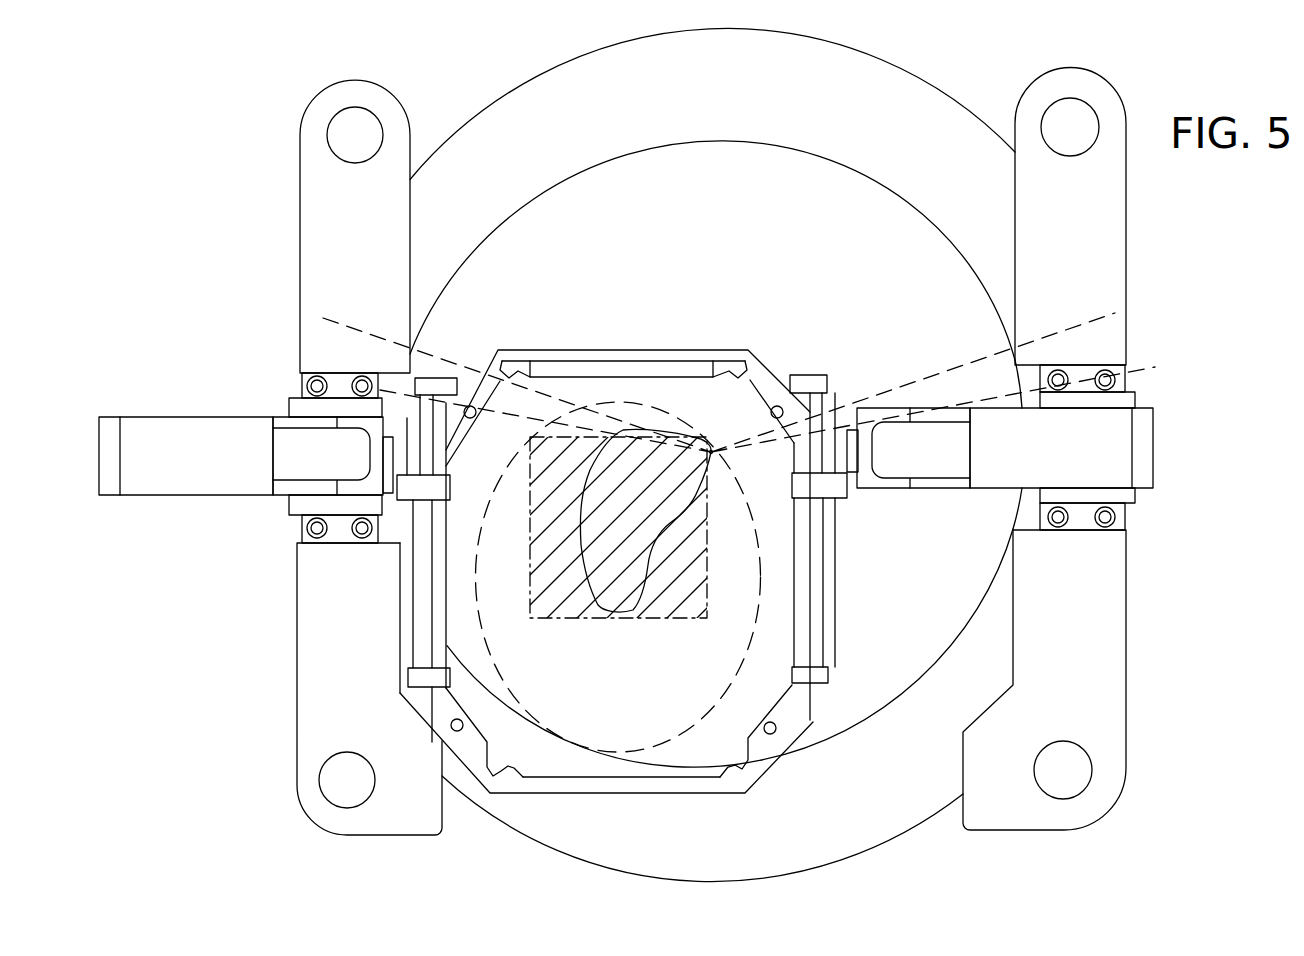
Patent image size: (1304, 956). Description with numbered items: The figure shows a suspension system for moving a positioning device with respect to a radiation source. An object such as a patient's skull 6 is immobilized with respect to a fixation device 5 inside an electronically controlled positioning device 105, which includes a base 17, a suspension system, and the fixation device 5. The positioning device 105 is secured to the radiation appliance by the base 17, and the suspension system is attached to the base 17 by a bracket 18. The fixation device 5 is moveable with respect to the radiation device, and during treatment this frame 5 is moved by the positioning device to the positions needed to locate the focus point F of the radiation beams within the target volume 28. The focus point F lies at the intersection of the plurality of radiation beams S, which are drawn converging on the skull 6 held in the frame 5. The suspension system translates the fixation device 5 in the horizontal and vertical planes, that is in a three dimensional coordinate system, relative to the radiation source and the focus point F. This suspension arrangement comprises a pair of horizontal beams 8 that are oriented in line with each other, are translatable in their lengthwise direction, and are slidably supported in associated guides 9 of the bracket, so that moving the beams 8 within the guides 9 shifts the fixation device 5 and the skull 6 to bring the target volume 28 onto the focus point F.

The fixation device 5 is at (773, 392).
The patient's skull 6 is at (735, 607).
The horizontal beams 8 is at (165, 480).
The guides 9 is at (302, 503).
The base 17 is at (935, 117).
The bracket 18 is at (1110, 200).
The target volume 28 is at (568, 602).
The electronically controlled positioning device 105 is at (218, 690).
The focus point F is at (710, 452).
The radiation beams S is at (352, 328).